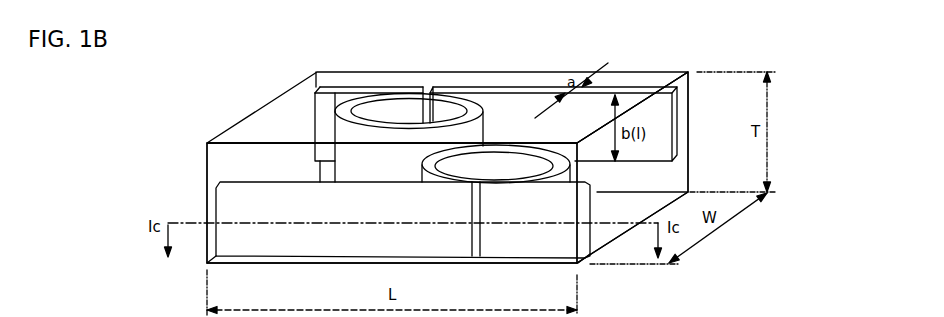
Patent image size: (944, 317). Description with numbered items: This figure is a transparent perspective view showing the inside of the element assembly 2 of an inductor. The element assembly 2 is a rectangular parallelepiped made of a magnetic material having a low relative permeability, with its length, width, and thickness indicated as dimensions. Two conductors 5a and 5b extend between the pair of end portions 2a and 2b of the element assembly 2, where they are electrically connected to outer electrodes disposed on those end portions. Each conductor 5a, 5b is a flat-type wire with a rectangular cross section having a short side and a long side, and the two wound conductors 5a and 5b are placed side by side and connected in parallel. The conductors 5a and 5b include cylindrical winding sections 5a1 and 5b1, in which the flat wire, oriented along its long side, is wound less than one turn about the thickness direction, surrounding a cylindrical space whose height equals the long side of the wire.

The element assembly 2 is at (256, 104).
The end portion of element assembly 2a is at (225, 170).
The end portion of element assembly 2b is at (675, 173).
The conductor 5a is at (300, 243).
The conductor 5b is at (636, 87).
The cylindrical winding section 5a1 is at (510, 105).
The cylindrical winding section 5b1 is at (392, 66).